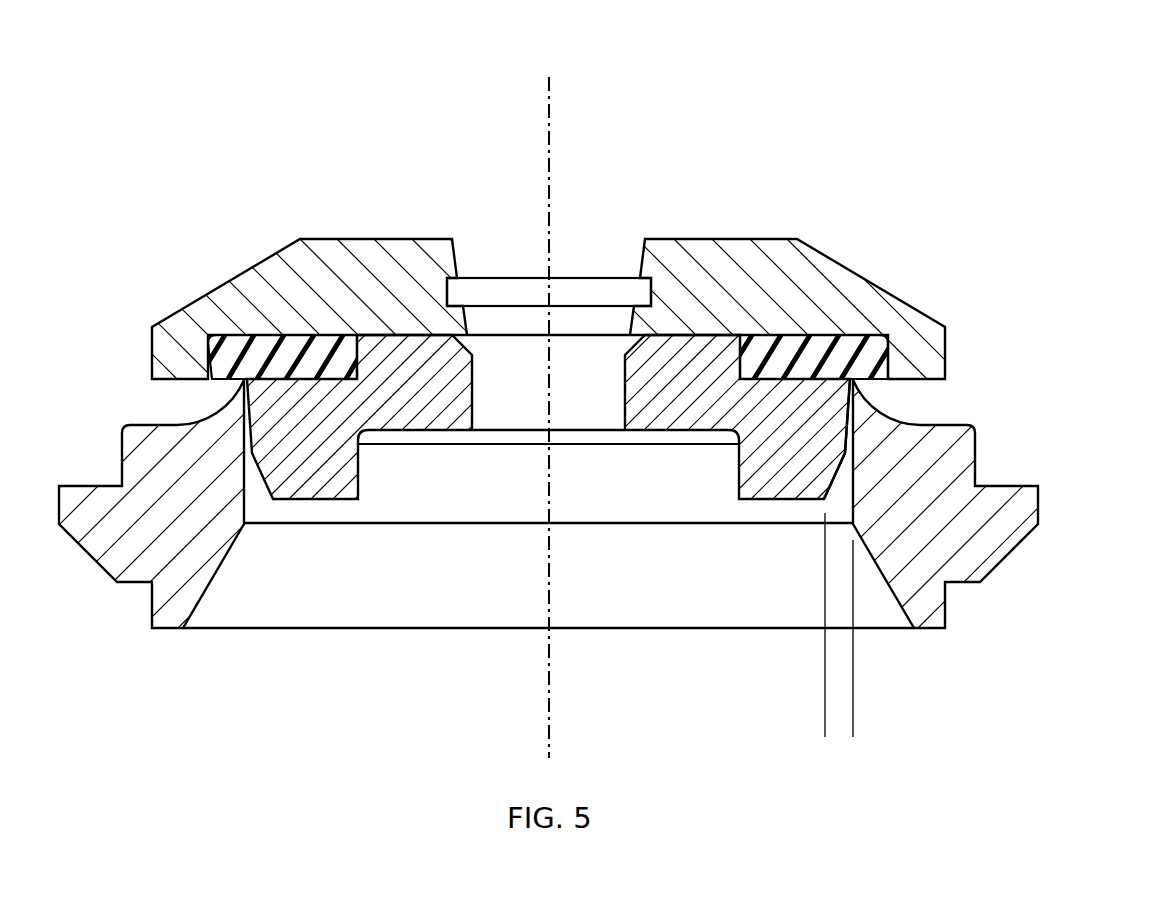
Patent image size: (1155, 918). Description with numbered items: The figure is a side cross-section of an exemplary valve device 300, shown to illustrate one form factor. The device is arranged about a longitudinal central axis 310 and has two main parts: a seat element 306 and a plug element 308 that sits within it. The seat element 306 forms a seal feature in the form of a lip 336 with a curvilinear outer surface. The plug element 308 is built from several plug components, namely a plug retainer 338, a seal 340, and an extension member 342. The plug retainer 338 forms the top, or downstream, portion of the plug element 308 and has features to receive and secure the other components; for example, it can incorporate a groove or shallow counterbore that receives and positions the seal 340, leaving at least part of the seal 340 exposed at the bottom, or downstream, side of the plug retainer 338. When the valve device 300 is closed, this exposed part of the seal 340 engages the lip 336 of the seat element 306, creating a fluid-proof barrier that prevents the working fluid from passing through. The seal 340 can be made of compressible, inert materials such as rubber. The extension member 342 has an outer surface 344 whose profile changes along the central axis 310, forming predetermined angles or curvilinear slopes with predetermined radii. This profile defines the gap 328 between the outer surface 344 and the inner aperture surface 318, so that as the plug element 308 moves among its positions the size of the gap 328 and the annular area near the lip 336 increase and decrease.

The valve device 300 is at (577, 396).
The seat element 306 is at (965, 635).
The plug element 308 is at (570, 280).
The central axis 310 is at (549, 105).
The inner aperture surface 318 is at (850, 488).
The gap 328 is at (912, 717).
The lip 336 is at (610, 435).
The plug retainer 338 is at (837, 273).
The seal 340 is at (887, 348).
The extension member 342 is at (822, 423).
The outer surface 344 is at (847, 450).